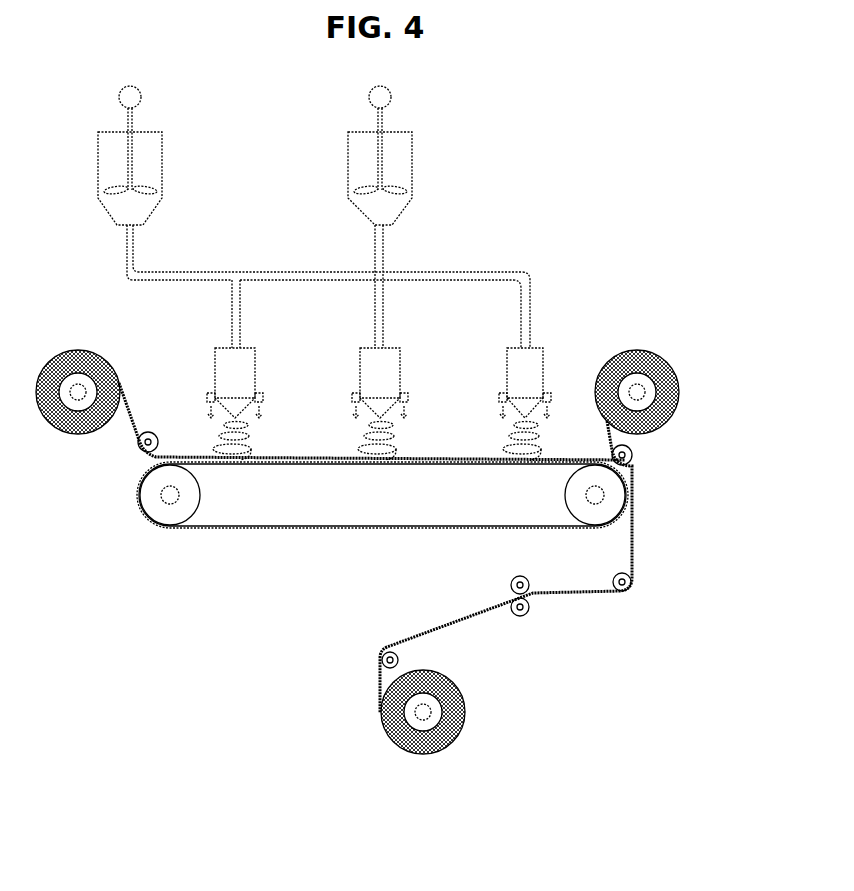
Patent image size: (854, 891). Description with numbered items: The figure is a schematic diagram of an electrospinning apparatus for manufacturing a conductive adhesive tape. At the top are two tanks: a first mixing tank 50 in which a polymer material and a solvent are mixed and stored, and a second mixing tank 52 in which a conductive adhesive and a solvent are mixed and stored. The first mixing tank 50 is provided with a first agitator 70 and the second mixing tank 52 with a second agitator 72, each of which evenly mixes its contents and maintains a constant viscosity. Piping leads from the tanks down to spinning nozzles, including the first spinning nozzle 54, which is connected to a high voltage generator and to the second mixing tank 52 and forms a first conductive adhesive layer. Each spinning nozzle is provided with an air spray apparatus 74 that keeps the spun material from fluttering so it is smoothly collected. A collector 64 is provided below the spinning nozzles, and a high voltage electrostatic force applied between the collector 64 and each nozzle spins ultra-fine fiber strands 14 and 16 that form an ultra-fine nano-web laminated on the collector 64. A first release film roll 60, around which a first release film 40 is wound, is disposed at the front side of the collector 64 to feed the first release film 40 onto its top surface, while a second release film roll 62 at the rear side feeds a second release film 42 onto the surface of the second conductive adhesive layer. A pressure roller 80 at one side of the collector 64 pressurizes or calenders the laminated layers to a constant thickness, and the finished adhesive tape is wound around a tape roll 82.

The ultra-fine fiber strand 14 is at (395, 438).
The ultra-fine fiber strand 16 is at (250, 438).
The first release film 40 is at (131, 404).
The second release film 42 is at (626, 441).
The first mixing tank 50 is at (412, 163).
The second mixing tank 52 is at (162, 168).
The first spinning nozzle 54 is at (240, 366).
The first release film roll 60 is at (80, 392).
The second release film roll 62 is at (637, 392).
The collector 64 is at (318, 463).
The first agitator 70 is at (406, 198).
The second agitator 72 is at (156, 198).
The air spray apparatus 74 is at (262, 397).
The pressure roller 80 is at (522, 608).
The tape roll 82 is at (430, 711).